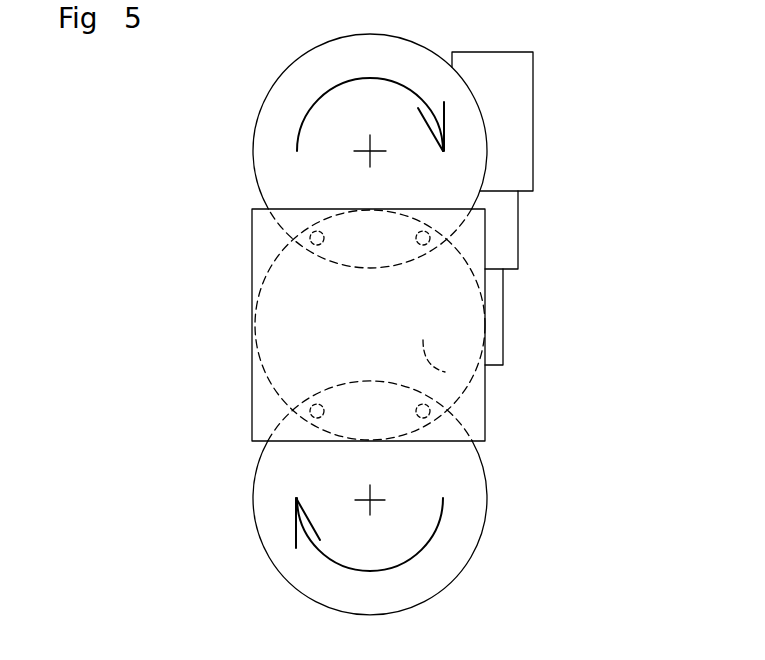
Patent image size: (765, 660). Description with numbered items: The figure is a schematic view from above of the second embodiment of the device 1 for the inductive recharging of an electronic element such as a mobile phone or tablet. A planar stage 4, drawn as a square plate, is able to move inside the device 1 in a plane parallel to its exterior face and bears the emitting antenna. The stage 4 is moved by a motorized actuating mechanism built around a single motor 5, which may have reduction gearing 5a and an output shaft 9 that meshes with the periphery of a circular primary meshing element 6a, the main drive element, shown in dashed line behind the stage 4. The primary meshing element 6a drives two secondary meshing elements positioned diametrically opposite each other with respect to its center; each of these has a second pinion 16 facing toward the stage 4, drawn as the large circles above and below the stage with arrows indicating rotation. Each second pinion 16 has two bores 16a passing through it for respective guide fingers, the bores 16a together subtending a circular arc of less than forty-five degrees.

The device 1 is at (563, 257).
The stage 4 is at (257, 393).
The motor 5 is at (503, 72).
The reduction gearing 5a is at (508, 248).
The primary meshing element 6a is at (445, 372).
The output shaft 9 is at (493, 332).
The second pinion 16 is at (322, 78).
The bores 16a is at (422, 230).